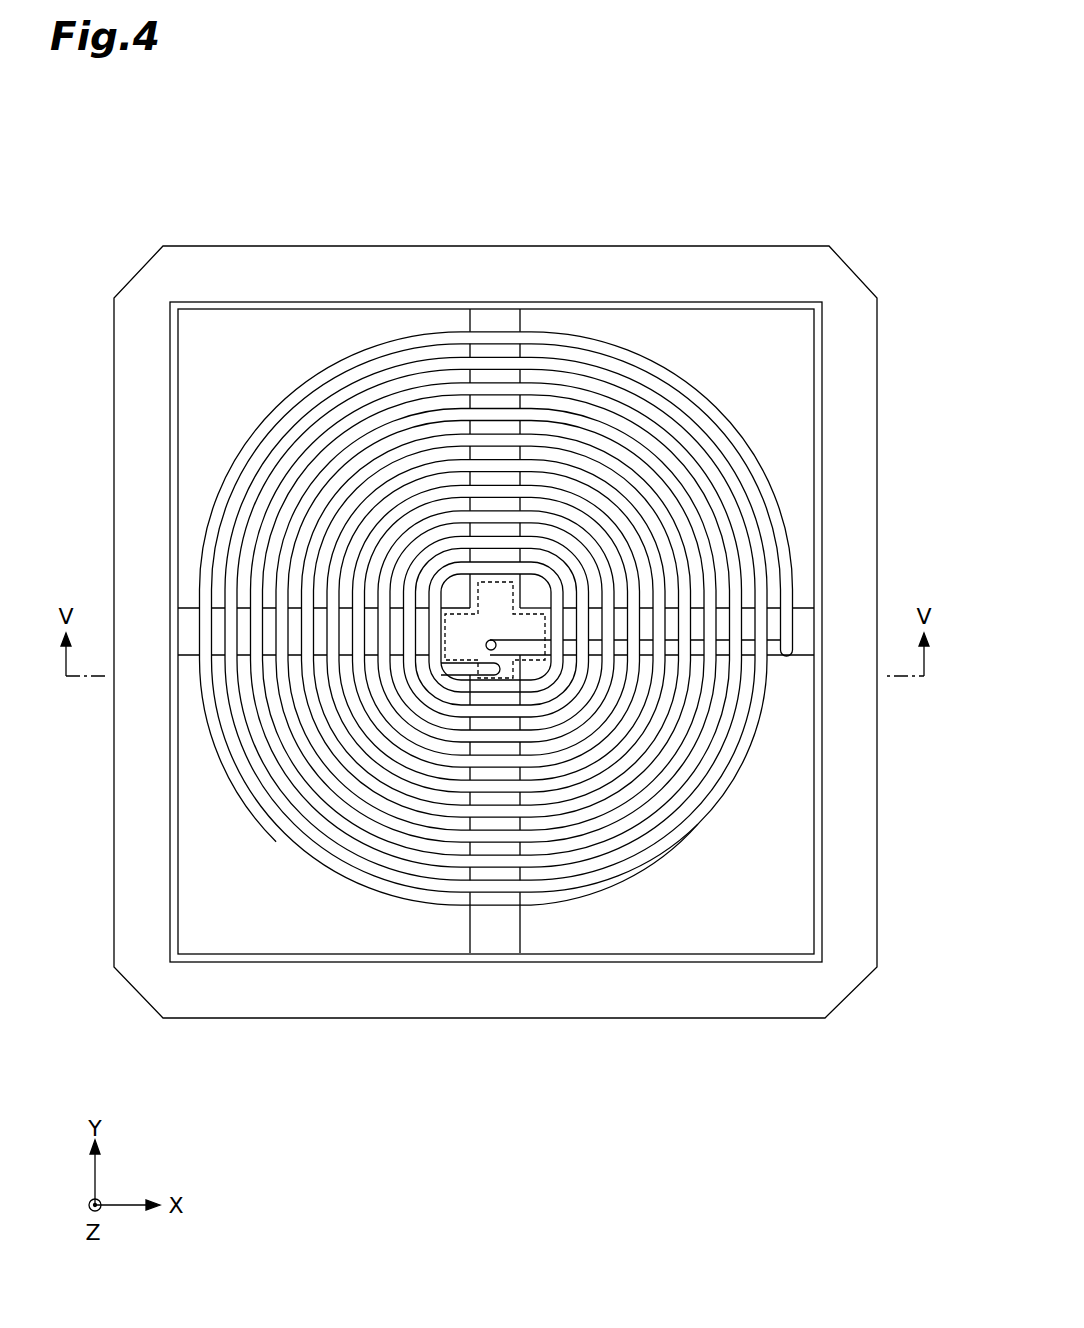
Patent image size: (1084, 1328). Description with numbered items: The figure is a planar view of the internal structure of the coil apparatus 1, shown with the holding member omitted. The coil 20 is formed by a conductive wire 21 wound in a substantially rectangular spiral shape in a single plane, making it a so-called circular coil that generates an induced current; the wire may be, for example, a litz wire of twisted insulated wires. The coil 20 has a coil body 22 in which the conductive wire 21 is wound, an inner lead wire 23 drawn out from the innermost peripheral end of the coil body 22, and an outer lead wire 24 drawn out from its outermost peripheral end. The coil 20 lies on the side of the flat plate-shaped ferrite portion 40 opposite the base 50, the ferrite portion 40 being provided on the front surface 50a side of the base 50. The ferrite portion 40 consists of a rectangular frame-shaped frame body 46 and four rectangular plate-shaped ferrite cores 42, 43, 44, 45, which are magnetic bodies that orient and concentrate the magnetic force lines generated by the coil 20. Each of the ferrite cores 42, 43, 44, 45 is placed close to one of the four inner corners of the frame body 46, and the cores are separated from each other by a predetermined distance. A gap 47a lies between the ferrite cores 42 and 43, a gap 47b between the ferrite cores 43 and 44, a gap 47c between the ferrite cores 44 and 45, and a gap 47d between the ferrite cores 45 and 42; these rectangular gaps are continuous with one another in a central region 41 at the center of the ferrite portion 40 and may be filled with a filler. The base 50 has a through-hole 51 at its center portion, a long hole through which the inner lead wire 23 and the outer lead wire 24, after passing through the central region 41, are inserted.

The antenna device 1 is at (774, 141).
The coil 20 is at (570, 612).
The conductive wire 21 is at (725, 800).
The coil body 22 is at (505, 530).
The inner lead wire 23 is at (460, 672).
The outer lead wire 24 is at (537, 655).
The ferrite portion 40 is at (820, 476).
The central region 41 is at (440, 600).
The ferrite core 42 is at (300, 330).
The ferrite core 43 is at (688, 330).
The ferrite core 44 is at (688, 935).
The ferrite core 45 is at (300, 935).
The frame body 46 is at (822, 400).
The gap 47a is at (508, 323).
The gap 47b is at (800, 615).
The gap 47c is at (495, 933).
The gap 47d is at (195, 628).
The base 50 is at (878, 705).
The front surface 50a is at (850, 612).
The through-hole 51 is at (488, 648).